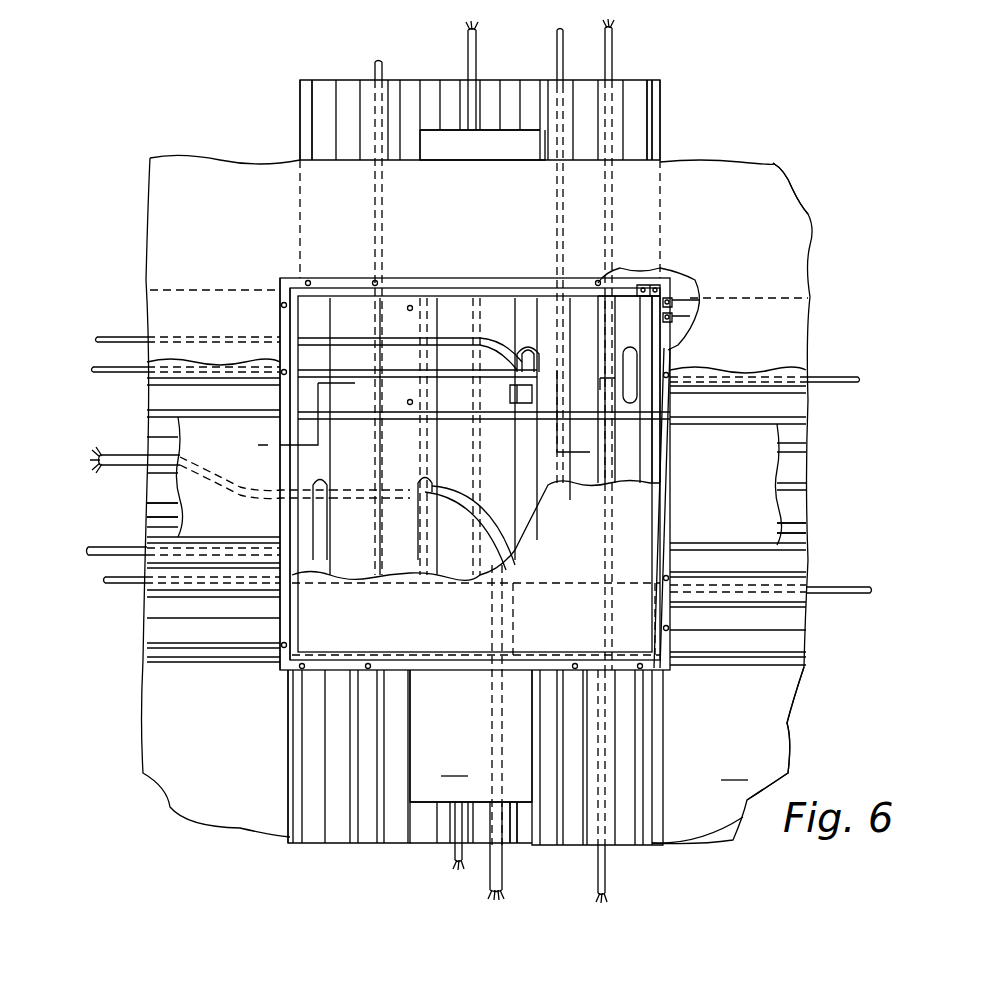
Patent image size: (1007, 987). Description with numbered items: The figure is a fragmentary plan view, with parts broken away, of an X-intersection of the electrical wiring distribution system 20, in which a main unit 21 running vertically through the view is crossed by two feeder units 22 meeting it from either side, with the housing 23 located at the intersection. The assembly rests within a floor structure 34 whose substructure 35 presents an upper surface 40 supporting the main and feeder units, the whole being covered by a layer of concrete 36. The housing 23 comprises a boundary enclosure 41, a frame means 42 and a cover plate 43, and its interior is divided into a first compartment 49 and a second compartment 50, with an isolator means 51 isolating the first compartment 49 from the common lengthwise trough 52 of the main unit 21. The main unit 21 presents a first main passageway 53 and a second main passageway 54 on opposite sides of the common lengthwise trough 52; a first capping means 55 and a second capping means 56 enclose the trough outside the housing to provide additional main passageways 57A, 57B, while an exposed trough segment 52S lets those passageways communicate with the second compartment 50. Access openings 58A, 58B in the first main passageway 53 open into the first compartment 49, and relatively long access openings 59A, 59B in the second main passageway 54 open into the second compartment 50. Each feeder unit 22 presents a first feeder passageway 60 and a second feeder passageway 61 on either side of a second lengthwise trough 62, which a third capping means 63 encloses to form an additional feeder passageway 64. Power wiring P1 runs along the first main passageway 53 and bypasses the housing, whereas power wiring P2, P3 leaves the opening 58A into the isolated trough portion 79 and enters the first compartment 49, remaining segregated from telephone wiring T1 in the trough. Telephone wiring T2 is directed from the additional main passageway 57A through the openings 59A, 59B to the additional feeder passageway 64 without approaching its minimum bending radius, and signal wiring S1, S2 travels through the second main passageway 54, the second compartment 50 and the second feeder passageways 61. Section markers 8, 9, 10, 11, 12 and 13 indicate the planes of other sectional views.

The section line 8- 8 is at (122, 442).
The section line 9- 9 is at (405, 55).
The section line 10- 10 is at (638, 650).
The section line 11- 11 is at (263, 583).
The section line 12- 12 is at (620, 463).
The section line 13- 13 is at (455, 648).
The electrical wiring distribution system 20 is at (298, 805).
The main unit 21 is at (665, 105).
The feeder unit 22 is at (142, 653).
The housing 23 is at (270, 668).
The floor structure 34 is at (800, 168).
The substructure 35 is at (768, 716).
The covering layer of concrete 36 is at (793, 225).
The upper surface 40 is at (700, 801).
The boundary enclosure 41 is at (667, 330).
The frame means 42 is at (290, 672).
The cover plate 43 is at (584, 619).
The first compartment 49 is at (350, 318).
The second compartment 50 is at (607, 445).
The isolator means 51 is at (432, 328).
The common lengthwise trough 52 is at (458, 120).
The trough segment 52S is at (498, 490).
The first main passageway 53 is at (637, 85).
The second main passageway 54 is at (328, 78).
The first capping means 55 is at (471, 736).
The second capping means 56 is at (507, 147).
The additional main passageway 57A is at (520, 830).
The additional main passageway 57B is at (500, 128).
The access opening 58A is at (530, 348).
The access opening 58B is at (632, 367).
The access opening 59A is at (318, 498).
The access opening 59B is at (425, 527).
The first feeder passageway 60 is at (145, 380).
The second feeder passageway 61 is at (142, 618).
The second lengthwise trough 62 is at (160, 445).
The third capping means 63 is at (238, 440).
The additional feeder passageway 64 is at (172, 497).
The trough portion 79 is at (508, 396).
The power wiring P1 is at (613, 38).
The power wiring P2 is at (117, 338).
The power wiring P3 is at (866, 340).
The signal wiring S1 is at (65, 610).
The signal wiring S2 is at (886, 568).
The telephone wiring T1 is at (455, 858).
The telephone wiring T2 is at (520, 908).